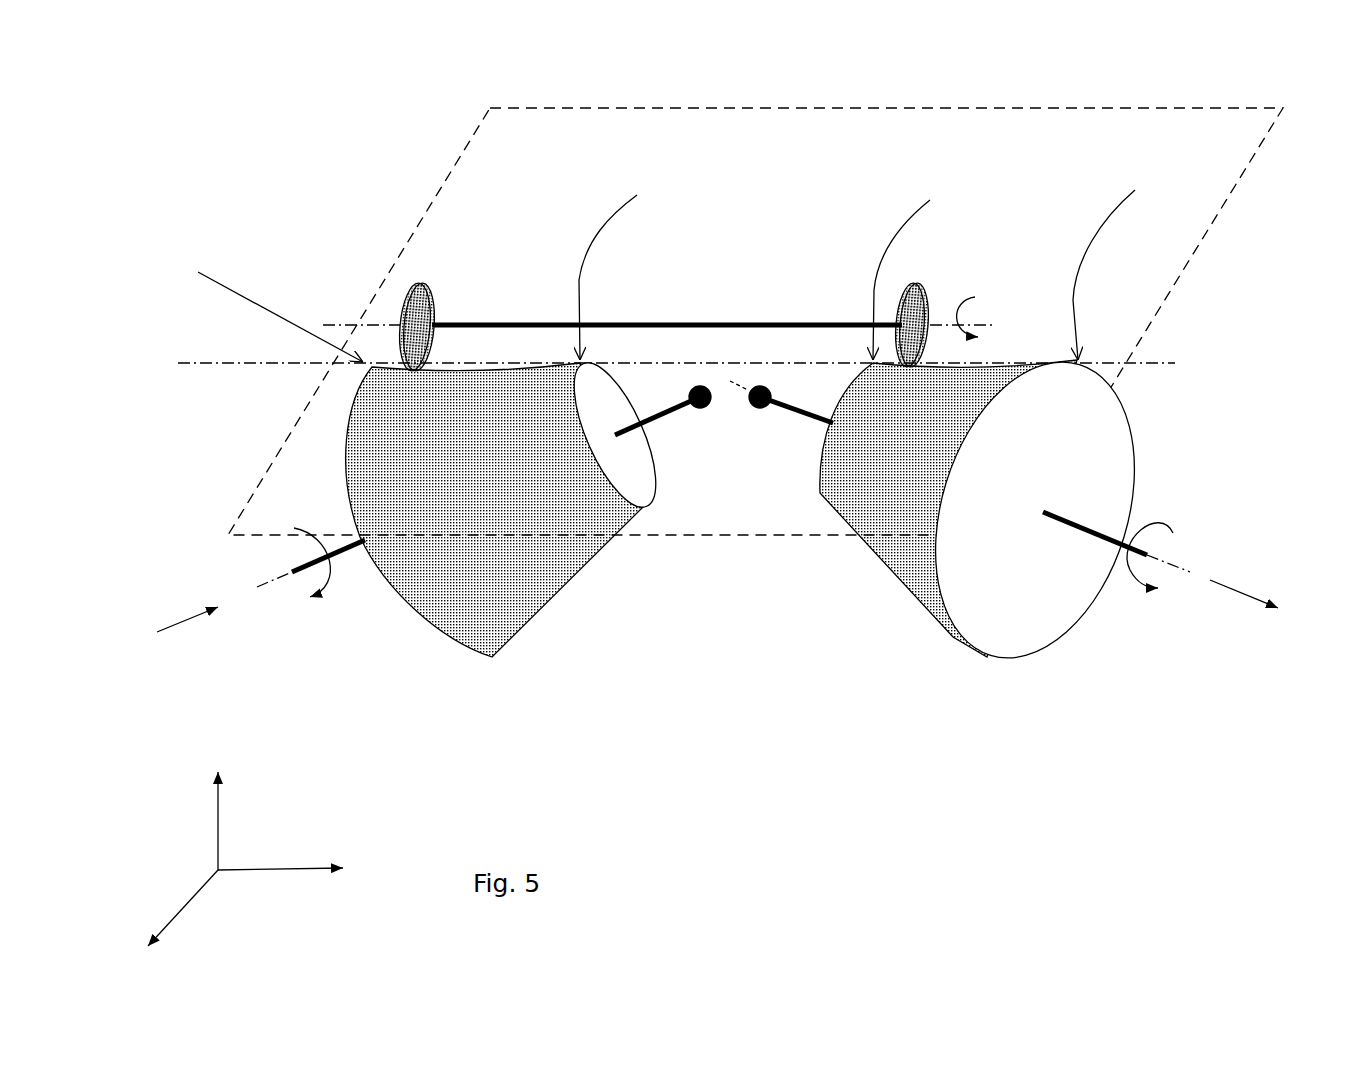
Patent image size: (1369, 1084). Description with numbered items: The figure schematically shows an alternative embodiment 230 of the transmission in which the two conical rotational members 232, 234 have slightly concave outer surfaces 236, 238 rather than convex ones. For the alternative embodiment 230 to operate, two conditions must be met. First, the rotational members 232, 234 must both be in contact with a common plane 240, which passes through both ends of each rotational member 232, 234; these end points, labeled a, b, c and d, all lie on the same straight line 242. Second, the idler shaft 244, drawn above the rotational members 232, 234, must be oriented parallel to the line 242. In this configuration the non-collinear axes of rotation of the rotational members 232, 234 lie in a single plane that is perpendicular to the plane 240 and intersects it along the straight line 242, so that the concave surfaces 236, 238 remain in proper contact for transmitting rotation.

The alternative embodiment 230 is at (332, 112).
The conical rotational member 232 is at (523, 658).
The conical rotational member 234 is at (902, 643).
The concave outer surface 236 is at (513, 575).
The concave outer surface 238 is at (925, 557).
The common plane 240 is at (1208, 177).
The straight line 242 is at (203, 370).
The idler shaft 244 is at (707, 323).